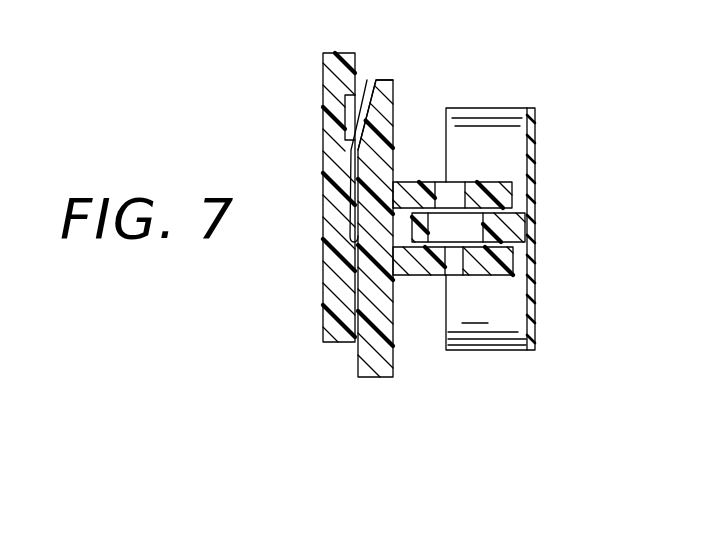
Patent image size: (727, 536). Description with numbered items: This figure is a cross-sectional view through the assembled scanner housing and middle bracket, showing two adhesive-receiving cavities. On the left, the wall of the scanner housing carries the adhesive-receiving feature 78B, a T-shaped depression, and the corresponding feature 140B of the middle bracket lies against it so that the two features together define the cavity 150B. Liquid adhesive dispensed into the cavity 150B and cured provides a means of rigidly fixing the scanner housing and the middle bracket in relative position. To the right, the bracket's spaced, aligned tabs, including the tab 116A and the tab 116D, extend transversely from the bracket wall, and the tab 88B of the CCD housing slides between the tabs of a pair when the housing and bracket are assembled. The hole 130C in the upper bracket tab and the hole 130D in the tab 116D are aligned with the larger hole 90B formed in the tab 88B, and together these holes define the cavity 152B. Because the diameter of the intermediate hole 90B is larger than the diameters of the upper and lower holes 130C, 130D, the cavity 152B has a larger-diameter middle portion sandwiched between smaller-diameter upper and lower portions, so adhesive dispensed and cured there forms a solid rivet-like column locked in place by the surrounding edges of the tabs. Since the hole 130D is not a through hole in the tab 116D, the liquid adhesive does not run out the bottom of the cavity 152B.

The adhesive-receiving feature 78B is at (350, 99).
The feature 140B is at (365, 78).
The cavity 150B is at (376, 90).
The tab 116A is at (428, 188).
The tab 116D is at (408, 272).
The hole 130C is at (448, 176).
The hole 130D is at (451, 258).
The cavity 152B is at (443, 230).
The tab 88B is at (490, 212).
The hole 90B is at (527, 193).